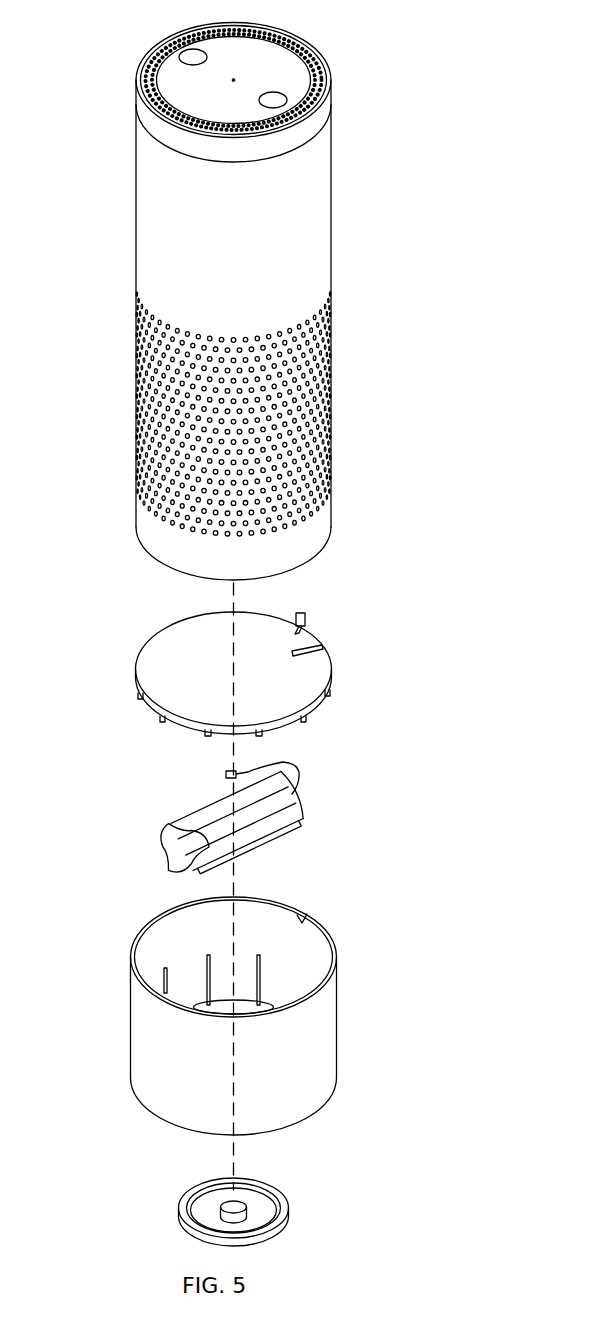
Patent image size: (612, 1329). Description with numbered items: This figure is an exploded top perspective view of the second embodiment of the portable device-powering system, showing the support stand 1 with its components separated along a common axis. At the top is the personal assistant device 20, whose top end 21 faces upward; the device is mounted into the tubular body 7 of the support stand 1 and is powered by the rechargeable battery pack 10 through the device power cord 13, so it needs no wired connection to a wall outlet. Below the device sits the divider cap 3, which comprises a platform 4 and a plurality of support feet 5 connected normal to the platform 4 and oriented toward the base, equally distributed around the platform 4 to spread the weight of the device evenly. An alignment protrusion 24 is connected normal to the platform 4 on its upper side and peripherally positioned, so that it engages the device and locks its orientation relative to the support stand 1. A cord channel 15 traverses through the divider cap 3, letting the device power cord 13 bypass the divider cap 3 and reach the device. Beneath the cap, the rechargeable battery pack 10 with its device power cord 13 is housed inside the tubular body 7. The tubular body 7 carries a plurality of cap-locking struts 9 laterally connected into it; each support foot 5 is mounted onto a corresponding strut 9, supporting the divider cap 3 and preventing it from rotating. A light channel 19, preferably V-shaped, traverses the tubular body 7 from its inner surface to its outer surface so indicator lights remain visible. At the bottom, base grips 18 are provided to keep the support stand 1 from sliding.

The support stand 1 is at (235, 1016).
The divider cap 3 is at (221, 677).
The platform 4 is at (158, 636).
The plurality of support feet 5 is at (141, 697).
The tubular body 7 is at (131, 1012).
The plurality of cap-locking struts 9 is at (166, 968).
The rechargeable battery pack 10 is at (152, 851).
The device power cord 13 is at (297, 776).
The cord channel 15 is at (310, 645).
The plurality of base grips 18 is at (226, 1205).
The light channel 19 is at (307, 916).
The personal assistant device 20 is at (137, 250).
The top end 21 is at (313, 44).
The alignment protrusion 24 is at (303, 612).